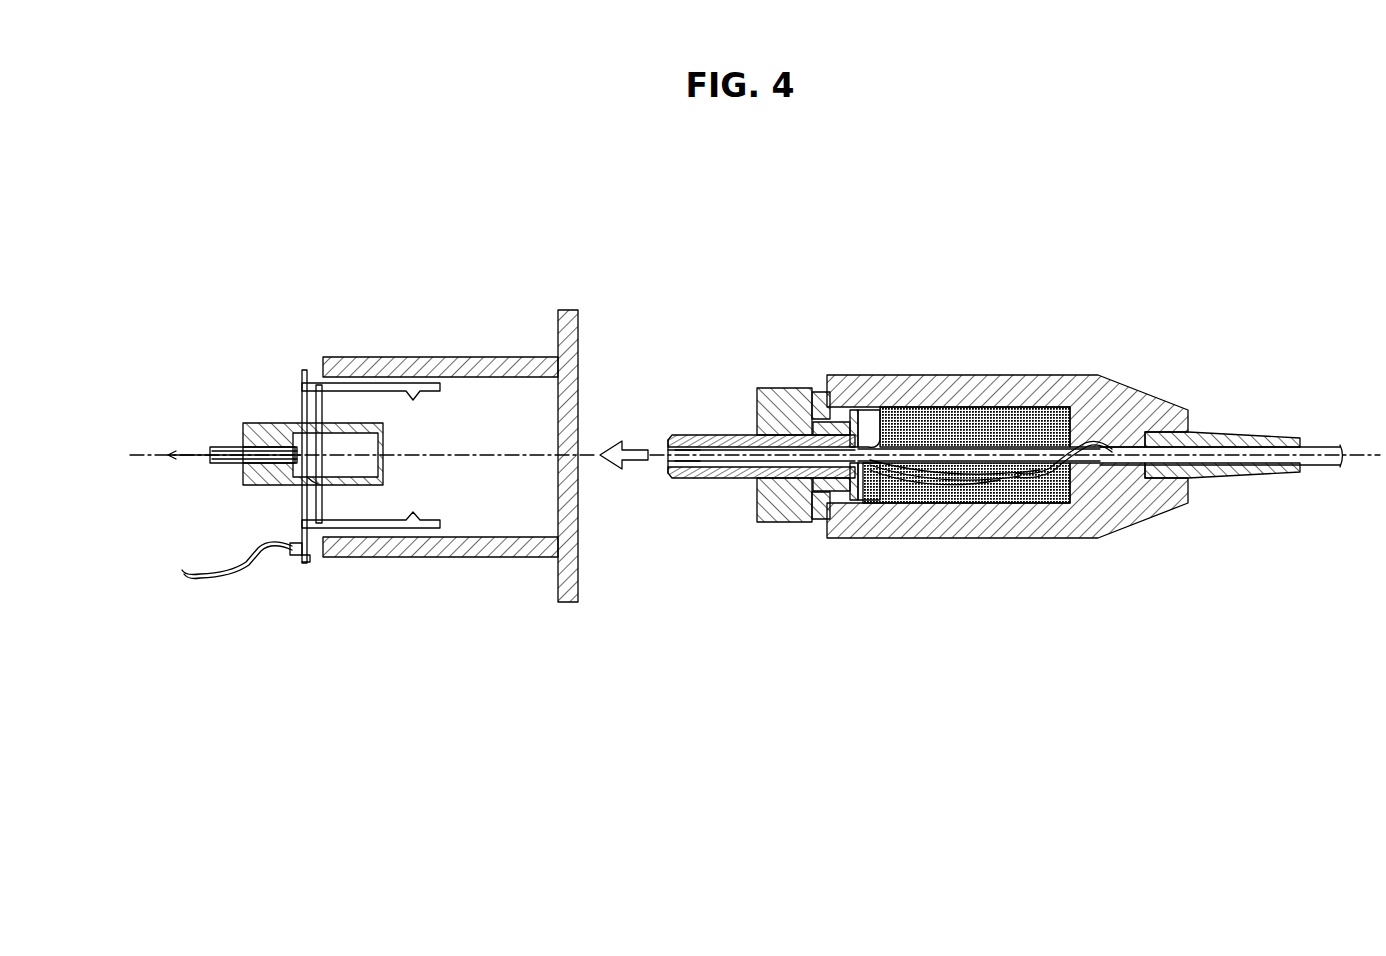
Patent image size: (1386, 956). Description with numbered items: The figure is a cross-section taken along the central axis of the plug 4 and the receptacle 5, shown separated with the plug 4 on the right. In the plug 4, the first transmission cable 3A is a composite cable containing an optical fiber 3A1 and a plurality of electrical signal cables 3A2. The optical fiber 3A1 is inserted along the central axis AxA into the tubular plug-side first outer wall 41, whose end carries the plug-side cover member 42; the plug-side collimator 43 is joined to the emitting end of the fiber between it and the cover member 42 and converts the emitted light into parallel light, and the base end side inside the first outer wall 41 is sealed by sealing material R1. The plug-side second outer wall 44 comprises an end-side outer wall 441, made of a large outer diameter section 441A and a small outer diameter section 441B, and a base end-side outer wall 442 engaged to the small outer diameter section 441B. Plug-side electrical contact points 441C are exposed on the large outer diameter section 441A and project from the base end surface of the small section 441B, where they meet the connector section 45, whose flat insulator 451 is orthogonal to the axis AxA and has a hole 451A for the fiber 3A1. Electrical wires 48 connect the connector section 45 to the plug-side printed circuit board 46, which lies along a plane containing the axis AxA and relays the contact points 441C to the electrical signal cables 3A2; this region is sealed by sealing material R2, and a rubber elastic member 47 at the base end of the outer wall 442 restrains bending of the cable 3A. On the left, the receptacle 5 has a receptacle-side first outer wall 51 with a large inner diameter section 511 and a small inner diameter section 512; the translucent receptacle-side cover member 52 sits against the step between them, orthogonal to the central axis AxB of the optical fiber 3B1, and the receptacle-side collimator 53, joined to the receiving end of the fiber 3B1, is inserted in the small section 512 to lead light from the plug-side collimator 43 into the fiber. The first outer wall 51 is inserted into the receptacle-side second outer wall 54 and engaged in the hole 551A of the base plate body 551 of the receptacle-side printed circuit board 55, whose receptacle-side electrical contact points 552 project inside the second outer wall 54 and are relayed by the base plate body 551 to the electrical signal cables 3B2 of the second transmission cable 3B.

The plug 4 is at (1053, 262).
The receptacle 5 is at (421, 262).
The first transmission cable 3A is at (1321, 447).
The optical fiber 3A1 is at (918, 444).
The electrical signal cables 3A2 is at (1073, 470).
The second transmission cable 3B is at (132, 482).
The optical fiber 3B1 is at (167, 460).
The electrical signal cables 3B2 is at (190, 570).
The central axis AxA is at (1362, 452).
The central axis AxB is at (143, 452).
The plug-side first outer wall 41 is at (700, 436).
The plug-side cover member 42 is at (669, 460).
The plug-side collimator 43 is at (693, 462).
The plug-side second outer wall 44 is at (890, 624).
The end-side outer wall 441 is at (771, 522).
The large outer diameter section 441A is at (770, 390).
The small outer diameter section 441B is at (833, 420).
The plug-side electrical contact points 441C is at (798, 391).
The base end-side outer wall 442 is at (876, 540).
The connector section 45 is at (868, 410).
The insulator 451 is at (886, 540).
The hole 451A is at (878, 412).
The plug-side printed circuit board 46 is at (980, 504).
The elastic member 47 is at (1211, 478).
The electrical wires 48 is at (925, 490).
The sealing material R1 is at (746, 436).
The sealing material R2 is at (1022, 502).
The receptacle-side first outer wall 51 is at (335, 319).
The large inner diameter section 511 is at (318, 395).
The small inner diameter section 512 is at (258, 422).
The receptacle-side cover member 52 is at (296, 484).
The receptacle-side collimator 53 is at (217, 447).
The receptacle-side second outer wall 54 is at (478, 370).
The receptacle-side printed circuit board 55 is at (400, 624).
The base plate body 551 is at (305, 566).
The hole 551A is at (318, 483).
The receptacle-side electrical contact points 552 is at (392, 386).